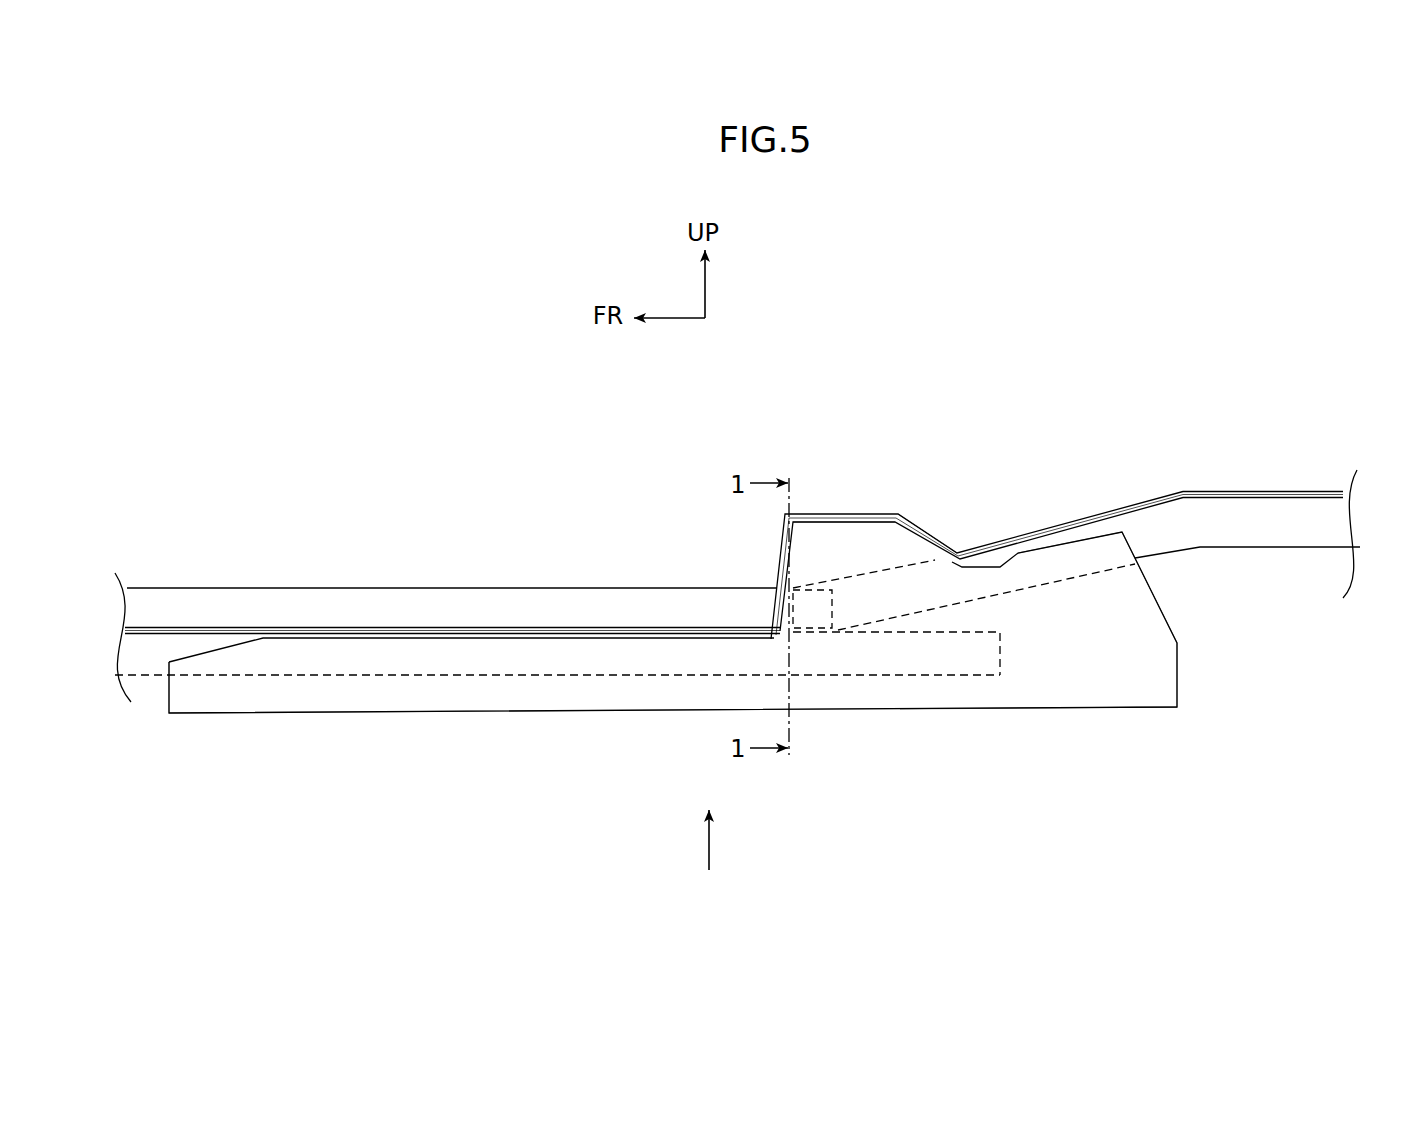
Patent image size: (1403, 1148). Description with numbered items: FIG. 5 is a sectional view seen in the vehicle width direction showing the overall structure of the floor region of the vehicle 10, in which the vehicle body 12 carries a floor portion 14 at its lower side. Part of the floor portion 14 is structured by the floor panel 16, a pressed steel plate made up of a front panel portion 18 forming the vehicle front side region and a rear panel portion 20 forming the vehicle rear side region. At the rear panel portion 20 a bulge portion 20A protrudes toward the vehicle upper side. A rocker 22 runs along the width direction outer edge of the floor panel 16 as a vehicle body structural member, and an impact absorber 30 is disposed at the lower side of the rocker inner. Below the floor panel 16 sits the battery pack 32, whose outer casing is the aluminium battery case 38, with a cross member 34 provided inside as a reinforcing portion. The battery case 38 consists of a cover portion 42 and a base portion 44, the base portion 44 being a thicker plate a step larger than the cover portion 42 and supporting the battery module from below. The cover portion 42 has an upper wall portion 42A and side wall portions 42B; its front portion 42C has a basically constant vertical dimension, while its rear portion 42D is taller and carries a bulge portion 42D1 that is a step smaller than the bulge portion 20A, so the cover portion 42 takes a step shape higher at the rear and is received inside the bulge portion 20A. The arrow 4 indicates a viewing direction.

The vehicle 10 is at (742, 422).
The vehicle body 12 is at (1077, 322).
The floor portion 14 is at (543, 406).
The floor panel 16 is at (818, 476).
The front panel portion 18 is at (530, 628).
The rear panel portion 20 is at (1188, 456).
The bulge portion 20A is at (880, 515).
The rocker 22 is at (247, 608).
The impact absorber 30 is at (149, 663).
The battery pack 32 is at (755, 583).
The cross member 34 is at (833, 612).
The battery case 38 is at (1232, 667).
The cover portion 42 is at (1164, 600).
The upper wall portion 42A is at (1060, 546).
The side wall portions 42B is at (592, 693).
The front portion 42C is at (220, 698).
The rear portion 42D is at (1155, 672).
The bulge portion 42D1 is at (848, 540).
The base portion 44 is at (1035, 710).
The viewing direction arrow 4 is at (709, 838).